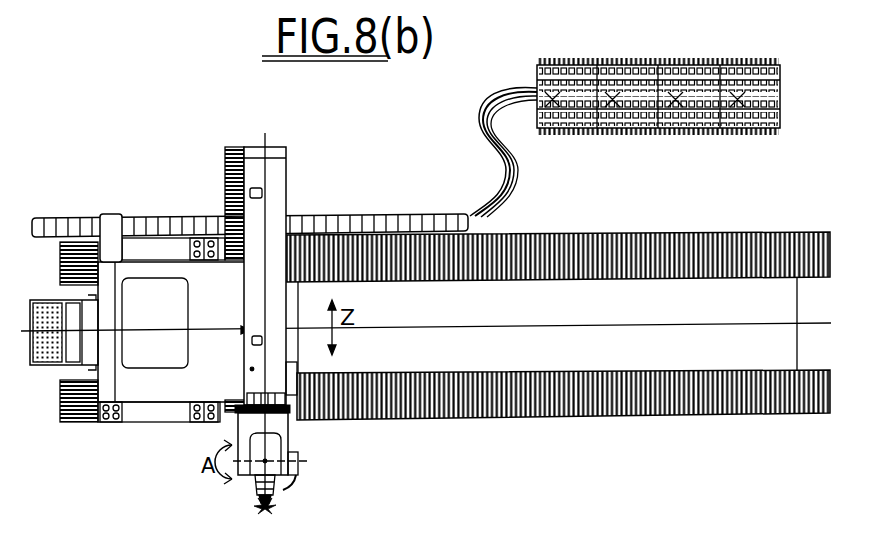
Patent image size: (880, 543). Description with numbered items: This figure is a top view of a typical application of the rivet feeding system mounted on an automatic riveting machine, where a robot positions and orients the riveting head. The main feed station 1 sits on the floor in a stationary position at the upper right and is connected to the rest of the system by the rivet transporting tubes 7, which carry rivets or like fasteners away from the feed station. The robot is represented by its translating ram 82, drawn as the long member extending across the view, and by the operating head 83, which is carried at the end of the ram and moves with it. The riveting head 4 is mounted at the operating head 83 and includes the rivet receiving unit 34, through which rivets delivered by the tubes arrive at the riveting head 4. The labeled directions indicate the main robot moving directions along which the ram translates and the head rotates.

The control board / connector 1 is at (780, 93).
The cable 7 is at (527, 185).
The column / Z-axis slider 82 is at (275, 172).
The rotary fixture 83 is at (250, 421).
The side tab / clamp 34 is at (300, 469).
The tool / welding torch tip 4 is at (258, 488).